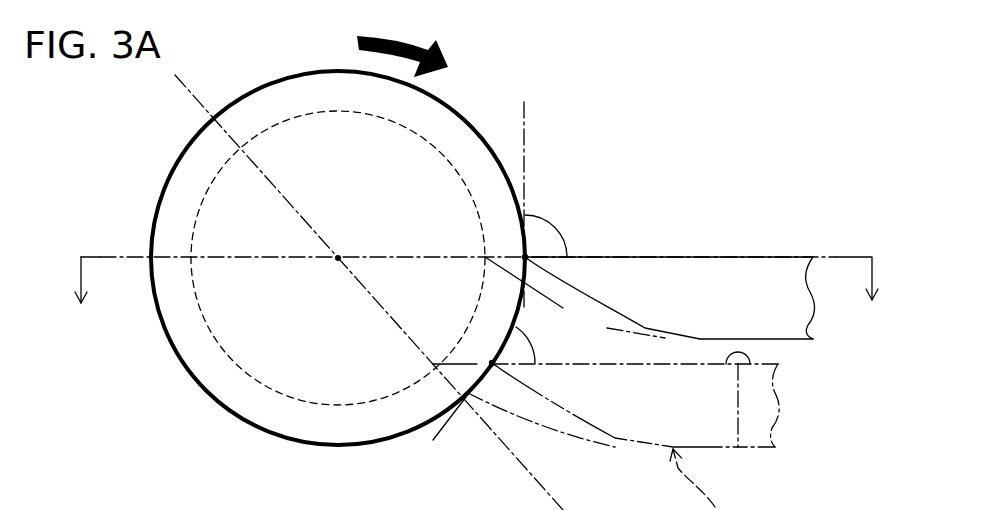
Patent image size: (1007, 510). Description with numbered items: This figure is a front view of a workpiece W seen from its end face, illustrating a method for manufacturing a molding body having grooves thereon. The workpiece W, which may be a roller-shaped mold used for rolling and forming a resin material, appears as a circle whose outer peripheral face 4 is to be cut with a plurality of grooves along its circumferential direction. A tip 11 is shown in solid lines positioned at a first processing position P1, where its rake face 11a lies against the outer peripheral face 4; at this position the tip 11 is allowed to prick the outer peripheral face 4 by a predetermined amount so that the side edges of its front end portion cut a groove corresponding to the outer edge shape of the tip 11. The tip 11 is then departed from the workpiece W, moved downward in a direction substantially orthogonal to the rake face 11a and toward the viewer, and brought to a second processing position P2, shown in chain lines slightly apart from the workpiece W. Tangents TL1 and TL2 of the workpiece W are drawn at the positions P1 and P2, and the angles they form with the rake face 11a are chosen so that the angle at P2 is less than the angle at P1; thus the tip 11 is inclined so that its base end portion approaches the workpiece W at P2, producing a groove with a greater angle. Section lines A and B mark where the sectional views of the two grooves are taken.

The outer peripheral face 4 is at (460, 116).
The workpiece W is at (222, 386).
The tip 11 is at (790, 341).
The rake face 11a is at (740, 257).
The first processing position P1 is at (528, 255).
The second processing position P2 is at (496, 362).
The tangent TL1 is at (527, 132).
The tangent TL2 is at (440, 441).
The section line A- A is at (476, 296).
The section line B- B is at (175, 75).